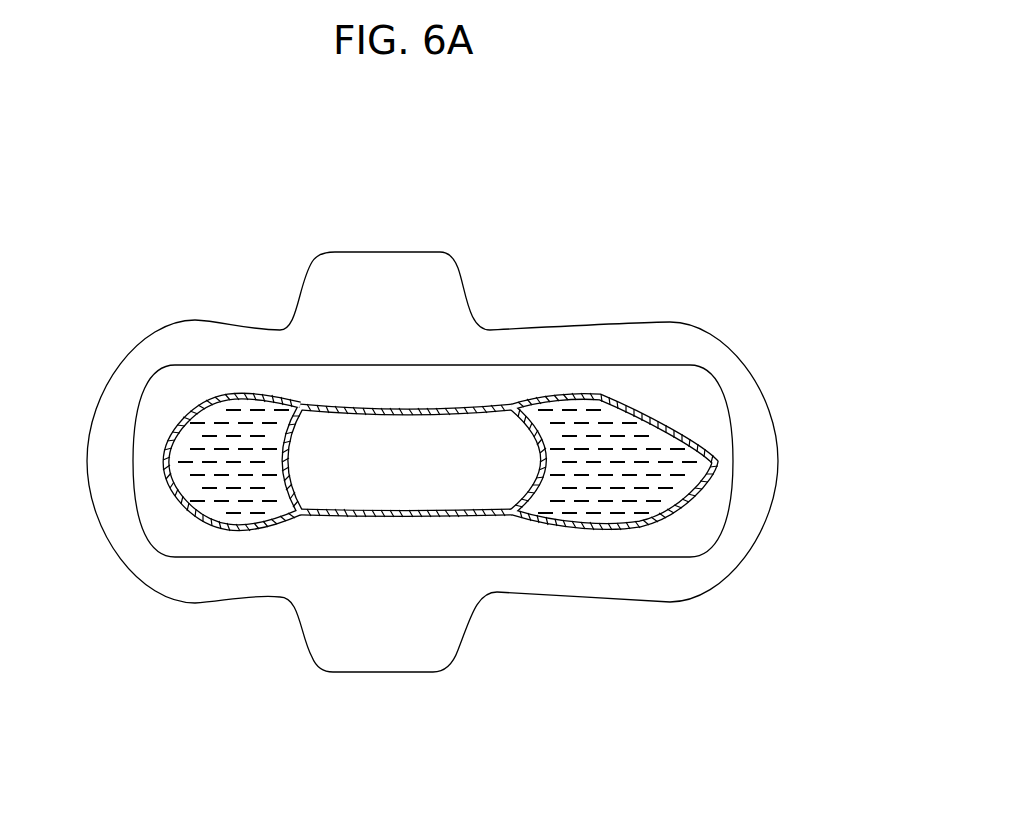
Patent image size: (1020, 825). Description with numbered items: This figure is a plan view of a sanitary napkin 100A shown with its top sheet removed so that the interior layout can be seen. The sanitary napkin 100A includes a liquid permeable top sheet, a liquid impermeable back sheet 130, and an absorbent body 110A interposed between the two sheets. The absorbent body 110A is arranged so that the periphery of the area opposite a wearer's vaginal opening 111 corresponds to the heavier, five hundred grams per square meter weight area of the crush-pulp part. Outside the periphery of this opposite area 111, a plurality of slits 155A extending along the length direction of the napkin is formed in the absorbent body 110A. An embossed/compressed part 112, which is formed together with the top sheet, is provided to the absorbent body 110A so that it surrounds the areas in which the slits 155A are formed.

The sanitary napkin 100A is at (672, 198).
The absorbent body 110A is at (595, 362).
The liquid impermeable back sheet 130 is at (374, 304).
The area opposite a wearer's vaginal opening 111 is at (415, 452).
The embossed/compressed part 112 is at (260, 533).
The slits 155A is at (610, 497).